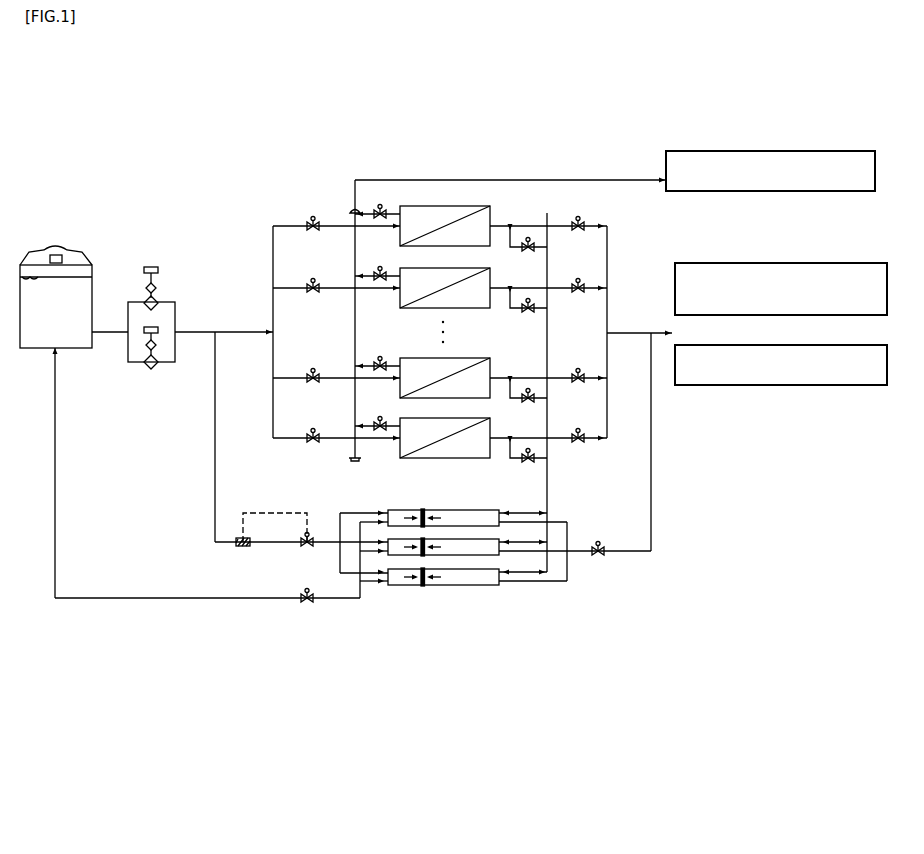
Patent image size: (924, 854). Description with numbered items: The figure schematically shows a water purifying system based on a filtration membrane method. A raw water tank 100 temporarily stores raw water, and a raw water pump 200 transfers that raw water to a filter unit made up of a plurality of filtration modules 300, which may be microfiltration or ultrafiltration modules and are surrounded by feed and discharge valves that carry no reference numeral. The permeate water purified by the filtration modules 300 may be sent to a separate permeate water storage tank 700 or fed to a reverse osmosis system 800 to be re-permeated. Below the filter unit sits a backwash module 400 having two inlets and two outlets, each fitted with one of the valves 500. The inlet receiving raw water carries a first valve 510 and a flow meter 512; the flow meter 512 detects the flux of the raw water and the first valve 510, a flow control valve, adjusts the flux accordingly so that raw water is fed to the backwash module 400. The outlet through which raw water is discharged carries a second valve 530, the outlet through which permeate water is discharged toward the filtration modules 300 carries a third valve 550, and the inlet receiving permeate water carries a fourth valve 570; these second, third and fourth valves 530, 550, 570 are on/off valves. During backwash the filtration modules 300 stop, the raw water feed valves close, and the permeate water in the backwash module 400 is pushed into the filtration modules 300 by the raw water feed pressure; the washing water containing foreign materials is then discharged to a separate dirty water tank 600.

The raw water tank 100 is at (82, 243).
The raw water pump 200 is at (148, 380).
The filtration module 300 is at (455, 240).
The backwash module 400 is at (440, 598).
The valves 500 is at (636, 630).
The first valve 510 is at (305, 548).
The flow meter 512 is at (243, 548).
The second valve 530 is at (302, 606).
The third valve 550 is at (520, 468).
The fourth valve 570 is at (602, 556).
The dirty water tank 600 is at (780, 151).
The permeate water storage tank 700 is at (780, 263).
The reverse osmosis system 800 is at (780, 385).